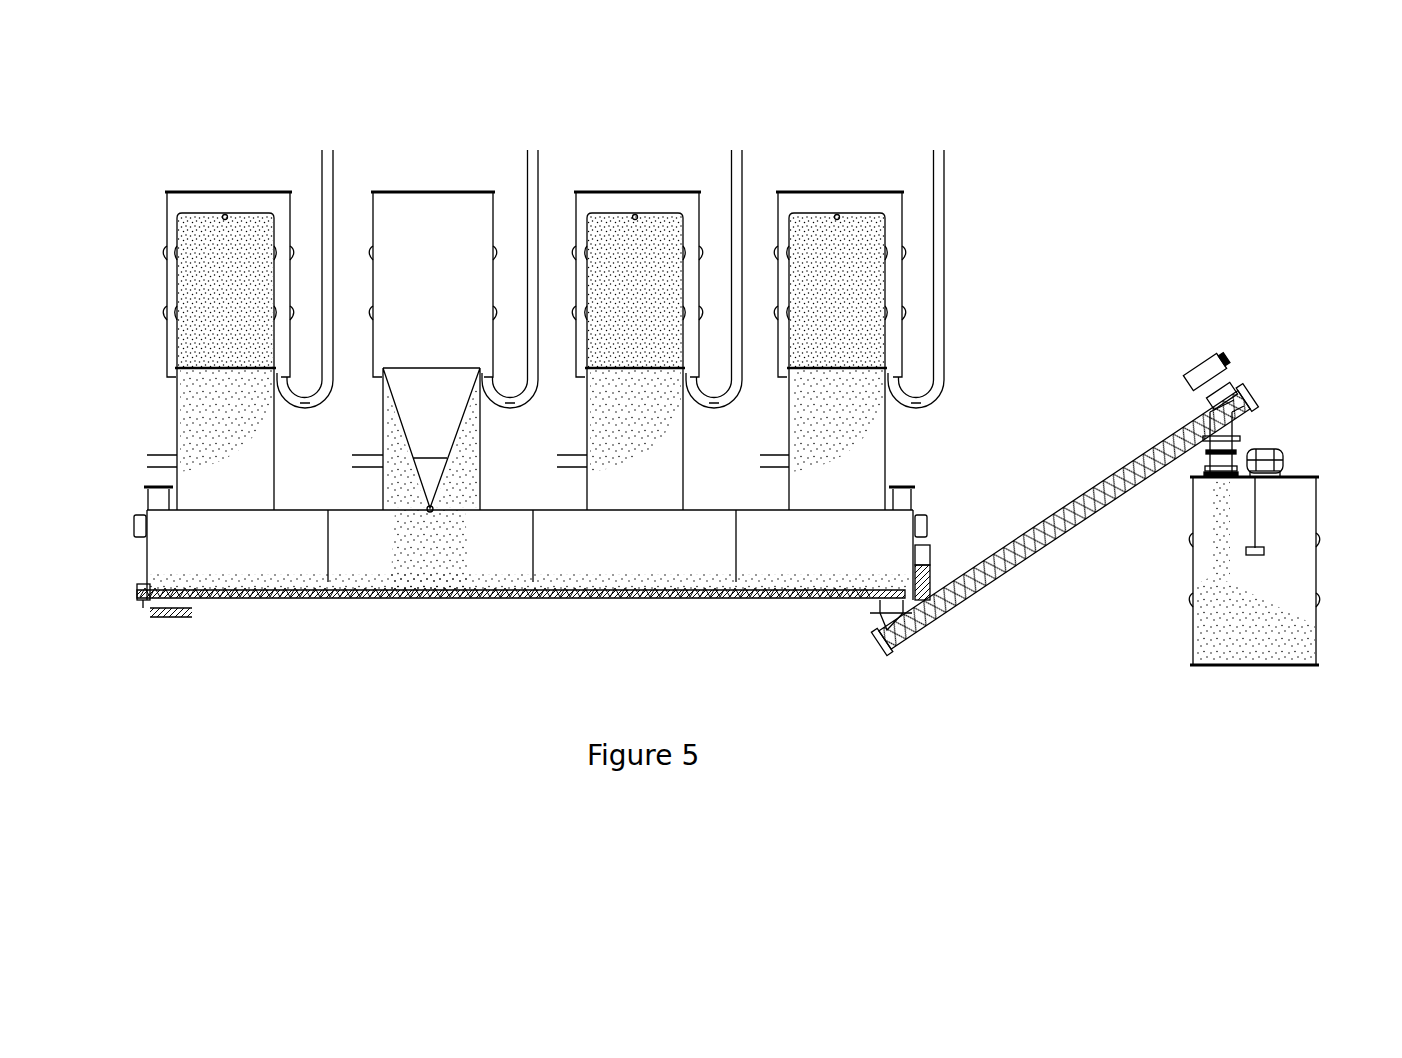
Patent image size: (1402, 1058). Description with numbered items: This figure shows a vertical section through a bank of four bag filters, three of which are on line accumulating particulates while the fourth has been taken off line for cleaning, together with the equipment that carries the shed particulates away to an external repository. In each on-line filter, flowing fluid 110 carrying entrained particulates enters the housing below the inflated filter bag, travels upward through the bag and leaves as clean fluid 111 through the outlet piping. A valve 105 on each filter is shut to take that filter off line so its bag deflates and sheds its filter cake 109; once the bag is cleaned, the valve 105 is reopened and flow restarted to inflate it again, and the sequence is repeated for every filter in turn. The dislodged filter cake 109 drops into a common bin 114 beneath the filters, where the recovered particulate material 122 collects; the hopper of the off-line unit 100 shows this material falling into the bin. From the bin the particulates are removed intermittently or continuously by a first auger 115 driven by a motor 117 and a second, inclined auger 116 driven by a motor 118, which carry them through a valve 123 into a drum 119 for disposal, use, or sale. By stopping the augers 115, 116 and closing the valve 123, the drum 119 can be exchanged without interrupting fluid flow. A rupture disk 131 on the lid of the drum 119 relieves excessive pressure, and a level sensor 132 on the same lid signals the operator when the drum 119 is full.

The hopper column with particulate material 100 is at (453, 548).
The valve 105 is at (922, 428).
The filter cake 109 is at (792, 253).
The flowing fluid 110 is at (138, 463).
The clean fluid 111 is at (939, 116).
The common bin 114 is at (638, 548).
The auger 115 is at (318, 599).
The auger 116 is at (1025, 556).
The motor 117 is at (928, 548).
The motor 118 is at (1197, 368).
The drum 119 is at (1316, 572).
The recovered particulate material 122 is at (172, 582).
The valve 123 is at (1237, 437).
The rupture disk 131 is at (1280, 470).
The level sensor 132 is at (1257, 515).